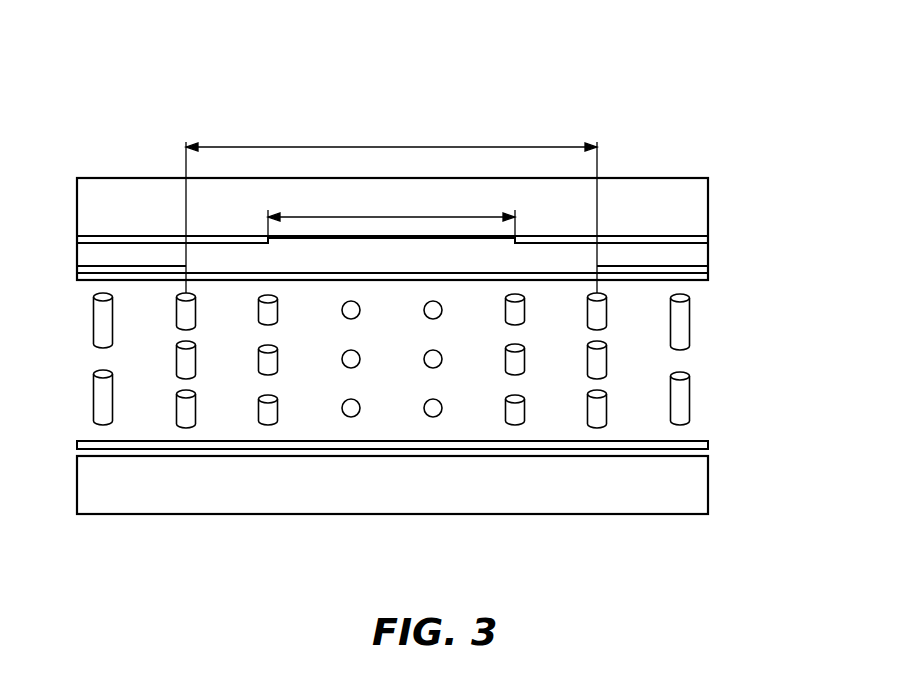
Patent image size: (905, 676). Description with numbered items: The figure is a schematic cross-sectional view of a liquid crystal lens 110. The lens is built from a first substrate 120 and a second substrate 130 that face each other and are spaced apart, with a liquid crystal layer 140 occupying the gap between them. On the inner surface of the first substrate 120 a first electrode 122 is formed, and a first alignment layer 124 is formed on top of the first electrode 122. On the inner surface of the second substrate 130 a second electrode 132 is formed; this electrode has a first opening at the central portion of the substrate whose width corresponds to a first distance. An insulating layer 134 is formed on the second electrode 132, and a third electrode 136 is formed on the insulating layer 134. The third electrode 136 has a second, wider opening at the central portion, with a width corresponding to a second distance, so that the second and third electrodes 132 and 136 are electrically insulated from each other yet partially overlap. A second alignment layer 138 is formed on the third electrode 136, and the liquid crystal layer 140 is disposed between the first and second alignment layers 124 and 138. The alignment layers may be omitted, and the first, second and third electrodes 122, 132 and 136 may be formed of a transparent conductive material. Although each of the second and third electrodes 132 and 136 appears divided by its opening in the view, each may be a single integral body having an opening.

The liquid crystal lens 110 is at (634, 120).
The first substrate 120 is at (670, 508).
The first electrode 122 is at (708, 453).
The first alignment layer 124 is at (708, 445).
The second substrate 130 is at (702, 202).
The second electrode 132 is at (706, 238).
The insulating layer 134 is at (706, 251).
The third electrode 136 is at (706, 266).
The second alignment layer 138 is at (706, 277).
The liquid crystal layer 140 is at (713, 284).